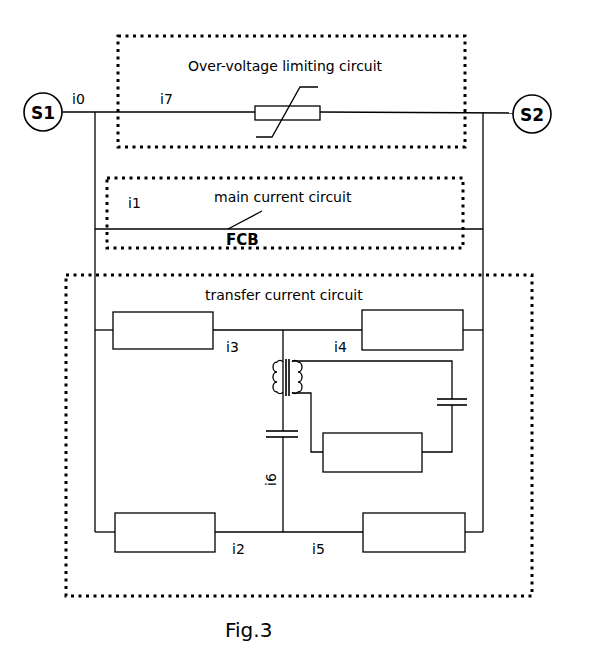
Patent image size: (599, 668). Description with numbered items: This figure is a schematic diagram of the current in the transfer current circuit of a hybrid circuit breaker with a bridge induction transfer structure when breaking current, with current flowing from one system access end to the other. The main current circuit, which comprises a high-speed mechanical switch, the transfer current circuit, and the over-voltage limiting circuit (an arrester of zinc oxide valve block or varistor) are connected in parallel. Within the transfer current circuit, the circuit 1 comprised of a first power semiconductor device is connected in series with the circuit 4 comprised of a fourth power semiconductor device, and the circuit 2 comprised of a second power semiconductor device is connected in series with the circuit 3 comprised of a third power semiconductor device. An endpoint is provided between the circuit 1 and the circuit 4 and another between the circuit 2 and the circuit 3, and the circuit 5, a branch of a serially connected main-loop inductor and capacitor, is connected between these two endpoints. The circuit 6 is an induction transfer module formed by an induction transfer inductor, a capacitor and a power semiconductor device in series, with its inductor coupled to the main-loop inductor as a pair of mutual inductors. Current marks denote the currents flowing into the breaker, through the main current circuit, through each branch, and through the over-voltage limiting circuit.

The circuit 1 is at (165, 520).
The circuit 2 is at (163, 318).
The circuit 3 is at (412, 318).
The circuit 4 is at (414, 520).
The circuit 5 is at (259, 400).
The circuit 6 is at (381, 416).